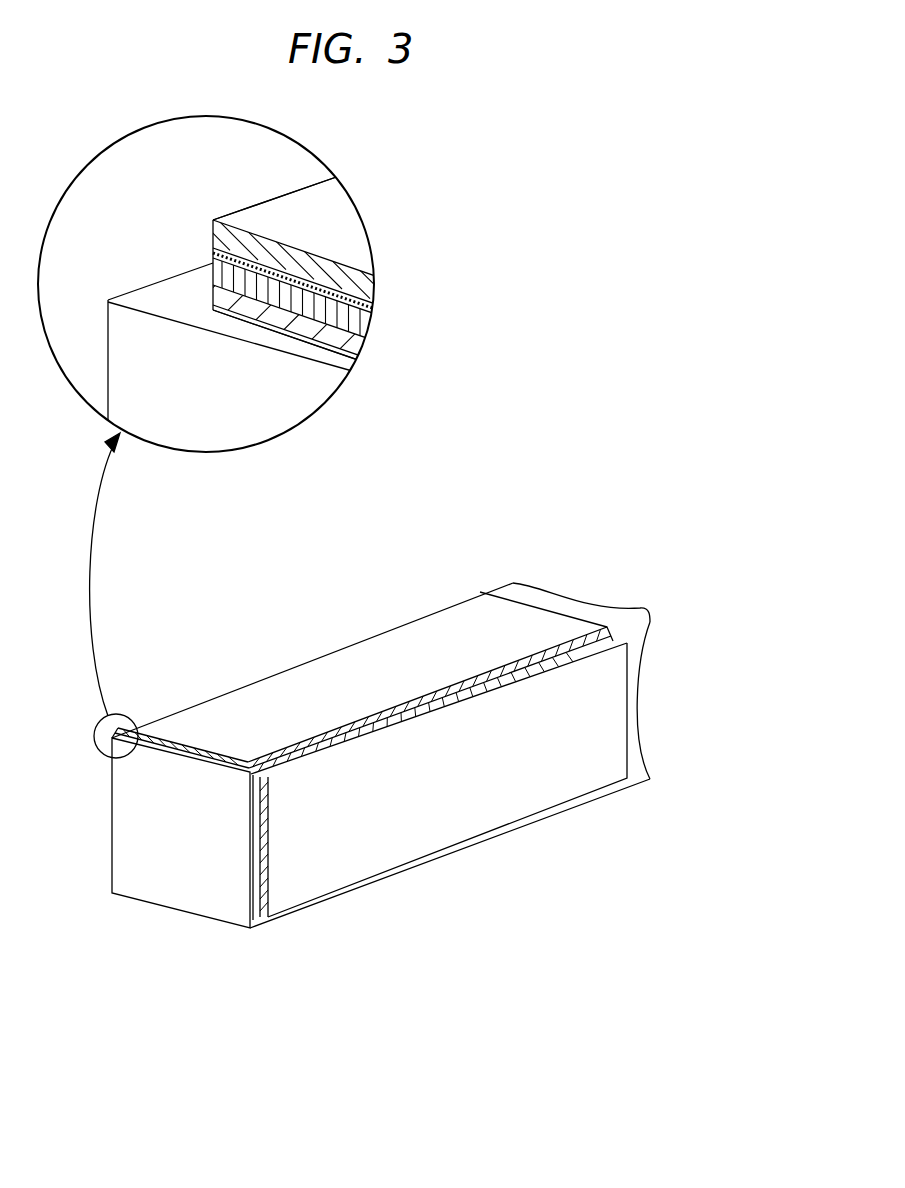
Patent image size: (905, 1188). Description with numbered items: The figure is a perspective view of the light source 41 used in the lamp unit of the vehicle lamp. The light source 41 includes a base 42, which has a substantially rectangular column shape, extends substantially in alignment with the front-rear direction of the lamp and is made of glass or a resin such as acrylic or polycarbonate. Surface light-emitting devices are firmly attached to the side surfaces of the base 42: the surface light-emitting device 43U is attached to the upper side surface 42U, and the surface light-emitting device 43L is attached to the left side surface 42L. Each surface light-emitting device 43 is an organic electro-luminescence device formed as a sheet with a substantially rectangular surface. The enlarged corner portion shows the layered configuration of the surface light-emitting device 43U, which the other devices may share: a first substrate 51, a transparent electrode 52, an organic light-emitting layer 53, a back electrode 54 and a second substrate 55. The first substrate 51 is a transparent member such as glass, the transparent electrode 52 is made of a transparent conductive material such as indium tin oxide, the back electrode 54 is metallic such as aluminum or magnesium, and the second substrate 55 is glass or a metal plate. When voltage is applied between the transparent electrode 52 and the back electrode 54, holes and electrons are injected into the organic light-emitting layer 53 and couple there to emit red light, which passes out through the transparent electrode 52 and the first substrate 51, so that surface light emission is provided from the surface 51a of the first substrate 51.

The light source 41 is at (372, 1014).
The base 42 is at (239, 340).
The upper side surface 42U is at (172, 293).
The left side surface 42L is at (267, 918).
The surface light-emitting device 43 is at (369, 578).
The surface light-emitting device 43U is at (315, 677).
The surface light-emitting device 43L is at (498, 805).
The first substrate 51 is at (368, 275).
The surface of the first substrate 51a is at (342, 206).
The transparent electrode 52 is at (372, 293).
The organic light-emitting layer 53 is at (365, 307).
The back electrode 54 is at (360, 325).
The second substrate 55 is at (312, 358).